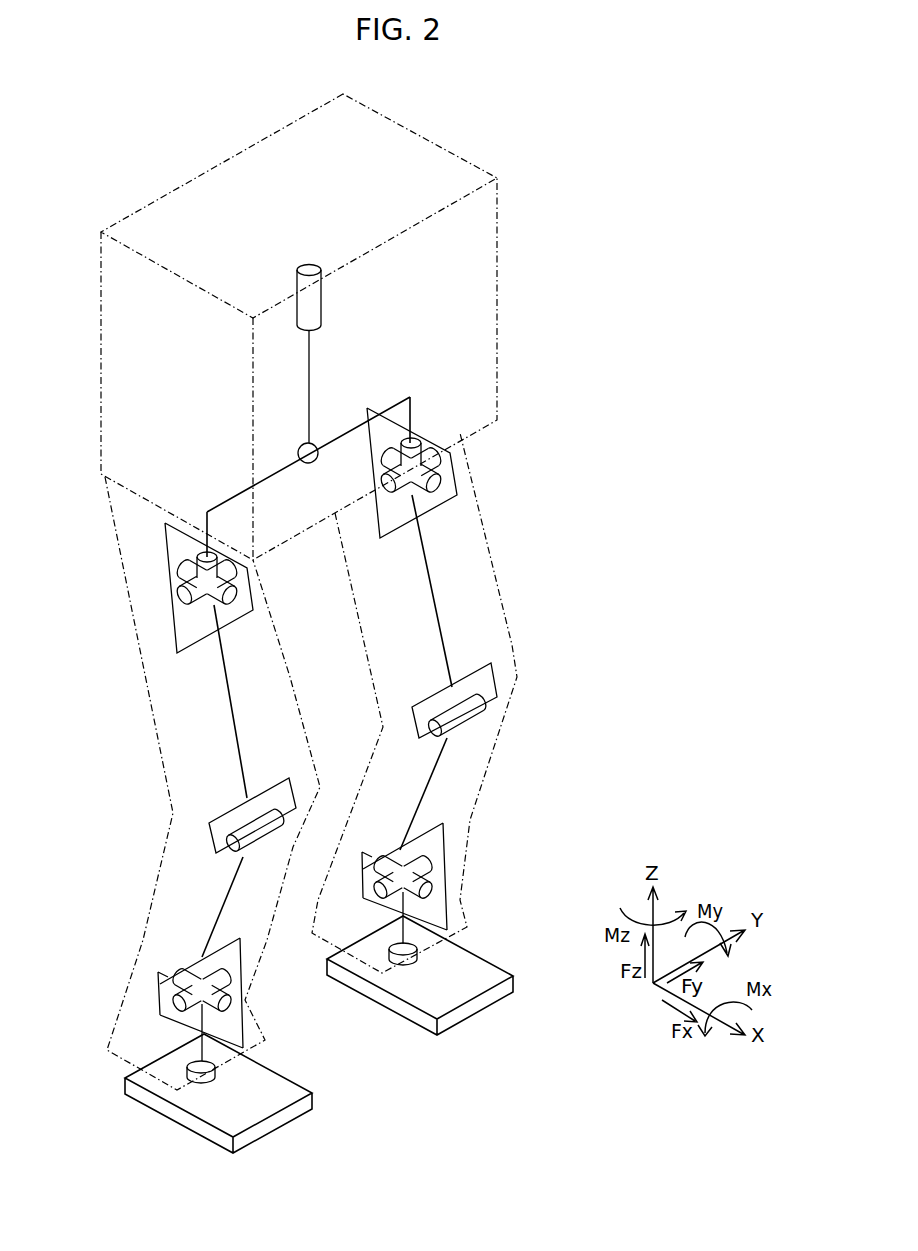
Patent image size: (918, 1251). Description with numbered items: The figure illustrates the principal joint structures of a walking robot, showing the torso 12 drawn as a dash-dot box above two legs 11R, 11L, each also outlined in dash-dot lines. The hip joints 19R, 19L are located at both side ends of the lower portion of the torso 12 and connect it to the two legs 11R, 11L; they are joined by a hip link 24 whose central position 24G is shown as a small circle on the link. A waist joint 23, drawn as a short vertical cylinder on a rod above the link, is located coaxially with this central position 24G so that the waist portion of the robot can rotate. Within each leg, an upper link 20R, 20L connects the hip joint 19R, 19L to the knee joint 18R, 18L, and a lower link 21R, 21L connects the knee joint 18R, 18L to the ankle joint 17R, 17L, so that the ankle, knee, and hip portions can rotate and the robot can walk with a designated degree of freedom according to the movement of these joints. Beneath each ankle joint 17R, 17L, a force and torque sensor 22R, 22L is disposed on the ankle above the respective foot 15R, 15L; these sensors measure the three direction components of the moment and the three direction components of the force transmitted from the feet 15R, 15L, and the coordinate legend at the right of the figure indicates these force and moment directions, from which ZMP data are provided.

The torso 12 is at (499, 321).
The right leg 11R is at (158, 760).
The left leg 11L is at (512, 648).
The waist joint 23 is at (297, 290).
The hip link 24 is at (349, 430).
The central position of the hip link 24G is at (300, 447).
The right hip joint 19R is at (175, 575).
The left hip joint 19L is at (450, 461).
The right upper link 20R is at (225, 677).
The left upper link 20L is at (433, 590).
The right knee joint 18R is at (212, 828).
The left knee joint 18L is at (465, 713).
The right lower link 21R is at (222, 899).
The left lower link 21L is at (432, 775).
The right ankle joint 17R is at (178, 985).
The left ankle joint 17L is at (440, 865).
The right force and torque sensor 22R is at (185, 1072).
The left force and torque sensor 22L is at (417, 942).
The right foot 15R is at (282, 1117).
The left foot 15L is at (487, 998).